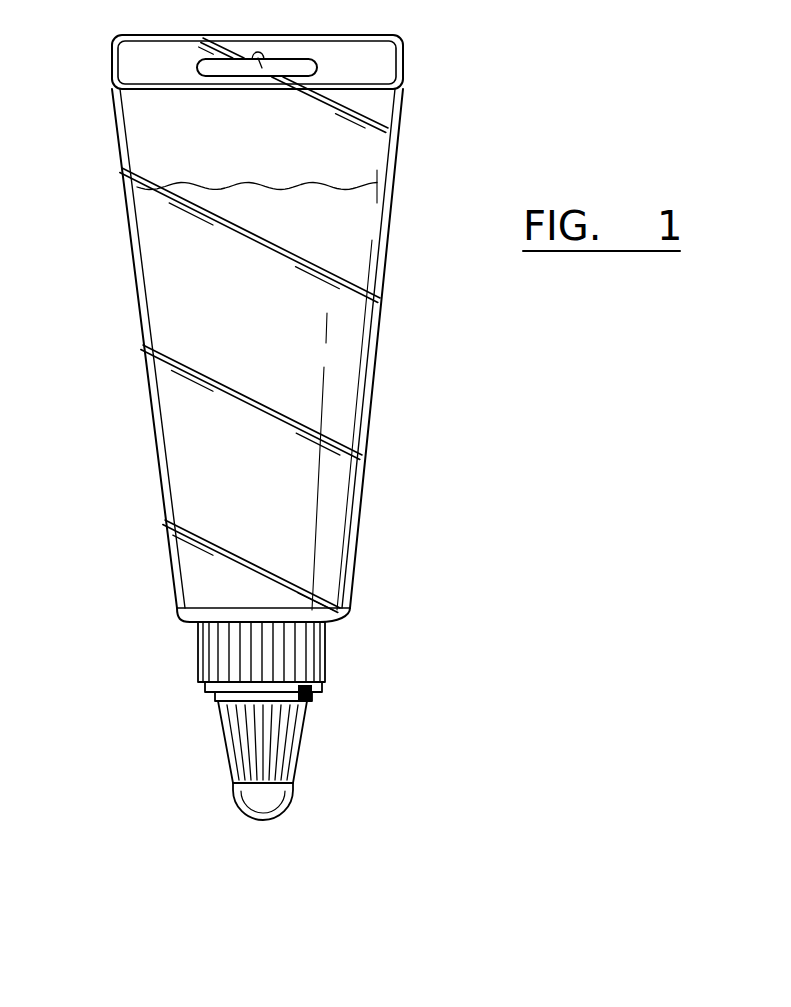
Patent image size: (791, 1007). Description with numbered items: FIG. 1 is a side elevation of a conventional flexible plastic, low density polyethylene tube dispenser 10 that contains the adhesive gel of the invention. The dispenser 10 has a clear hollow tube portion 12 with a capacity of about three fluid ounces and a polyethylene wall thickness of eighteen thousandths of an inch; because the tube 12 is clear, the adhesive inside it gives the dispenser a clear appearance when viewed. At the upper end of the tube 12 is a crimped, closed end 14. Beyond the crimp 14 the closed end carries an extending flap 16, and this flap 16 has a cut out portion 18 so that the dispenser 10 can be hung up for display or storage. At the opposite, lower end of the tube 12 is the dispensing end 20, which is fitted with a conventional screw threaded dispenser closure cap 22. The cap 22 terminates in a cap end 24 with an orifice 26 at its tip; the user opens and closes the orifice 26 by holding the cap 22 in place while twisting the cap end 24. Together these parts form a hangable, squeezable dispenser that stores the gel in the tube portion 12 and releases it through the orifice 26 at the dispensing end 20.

The tube dispenser 10 is at (267, 438).
The hollow tube portion 12 is at (343, 427).
The crimped closed end 14 is at (403, 87).
The extending flap 16 is at (135, 65).
The cut out portion 18 is at (263, 62).
The dispensing end 20 is at (197, 624).
The dispenser closure cap 22 is at (326, 655).
The cap end 24 is at (300, 745).
The orifice 26 is at (262, 820).